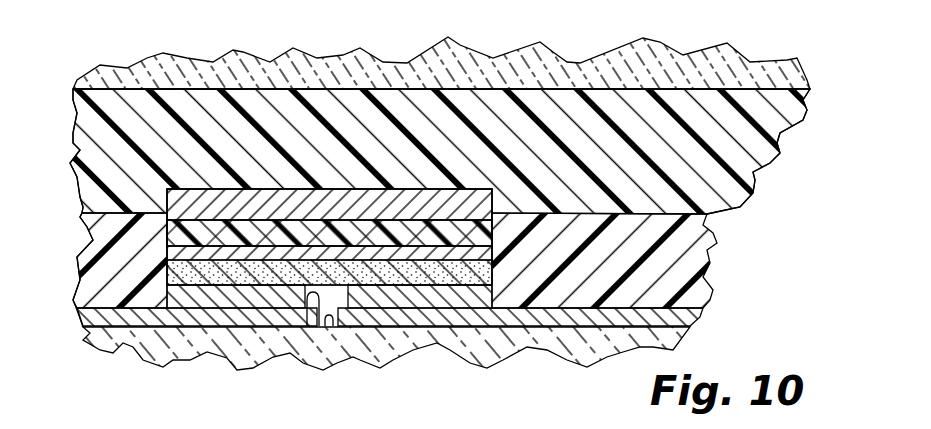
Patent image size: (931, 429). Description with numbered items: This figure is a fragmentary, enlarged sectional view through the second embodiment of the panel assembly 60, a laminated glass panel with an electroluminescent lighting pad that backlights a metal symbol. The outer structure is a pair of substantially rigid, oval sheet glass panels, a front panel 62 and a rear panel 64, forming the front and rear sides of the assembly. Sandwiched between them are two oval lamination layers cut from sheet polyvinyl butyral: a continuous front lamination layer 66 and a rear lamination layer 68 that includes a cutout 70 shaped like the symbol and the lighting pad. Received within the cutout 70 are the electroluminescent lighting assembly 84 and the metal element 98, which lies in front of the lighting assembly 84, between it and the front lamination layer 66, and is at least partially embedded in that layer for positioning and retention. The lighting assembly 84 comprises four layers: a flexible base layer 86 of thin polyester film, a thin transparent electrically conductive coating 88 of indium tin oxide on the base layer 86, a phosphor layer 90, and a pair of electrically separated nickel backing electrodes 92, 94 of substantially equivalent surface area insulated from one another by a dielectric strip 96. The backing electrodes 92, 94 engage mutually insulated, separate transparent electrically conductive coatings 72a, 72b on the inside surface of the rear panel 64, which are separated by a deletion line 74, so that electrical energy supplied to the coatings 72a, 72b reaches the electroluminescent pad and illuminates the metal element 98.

The panel assembly 60 is at (815, 102).
The front panel 62 is at (317, 66).
The rear panel 64 is at (676, 345).
The front lamination layer 66 is at (588, 115).
The rear lamination layer 68 is at (707, 241).
The cutout 70 is at (197, 135).
The transparent electrically conductive coating 72a is at (105, 316).
The transparent electrically conductive coating 72b is at (665, 323).
The deletion line 74 is at (330, 327).
The electroluminescent lighting assembly 84 is at (493, 246).
The base layer 86 is at (265, 240).
The transparent electrically conductive coating 88 is at (230, 252).
The phosphor layer 90 is at (455, 272).
The backing electrode 92 is at (180, 295).
The backing electrode 94 is at (428, 310).
The dielectric strip 96 is at (308, 308).
The metal element 98 is at (440, 207).